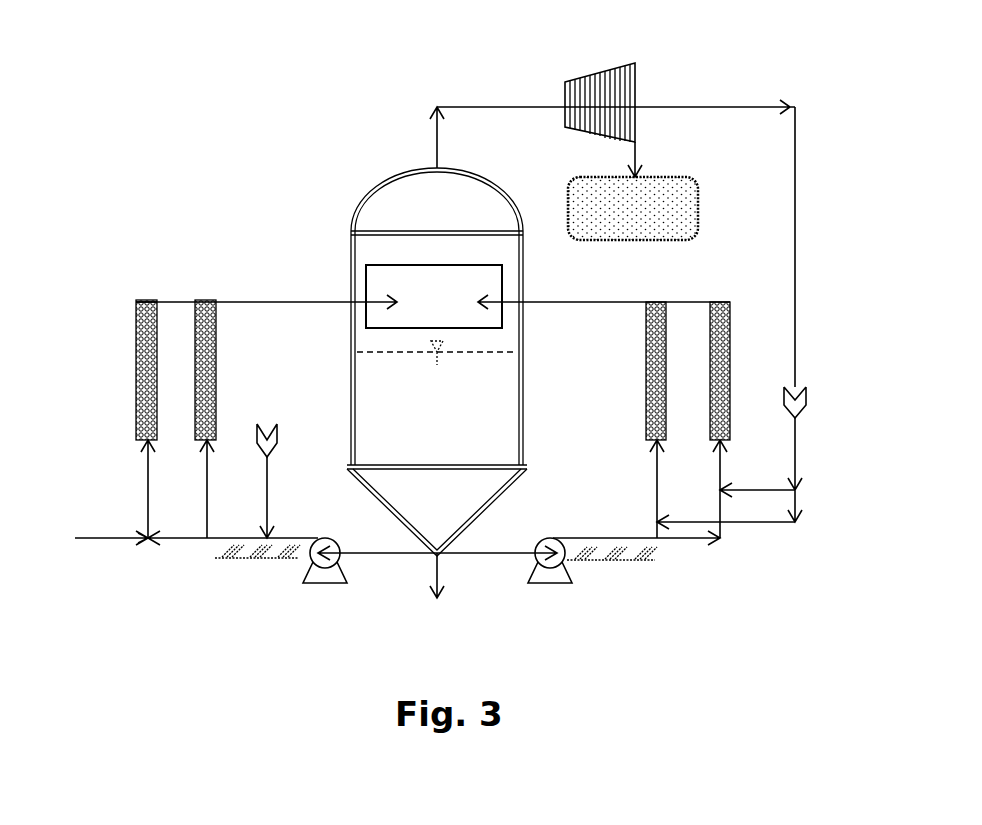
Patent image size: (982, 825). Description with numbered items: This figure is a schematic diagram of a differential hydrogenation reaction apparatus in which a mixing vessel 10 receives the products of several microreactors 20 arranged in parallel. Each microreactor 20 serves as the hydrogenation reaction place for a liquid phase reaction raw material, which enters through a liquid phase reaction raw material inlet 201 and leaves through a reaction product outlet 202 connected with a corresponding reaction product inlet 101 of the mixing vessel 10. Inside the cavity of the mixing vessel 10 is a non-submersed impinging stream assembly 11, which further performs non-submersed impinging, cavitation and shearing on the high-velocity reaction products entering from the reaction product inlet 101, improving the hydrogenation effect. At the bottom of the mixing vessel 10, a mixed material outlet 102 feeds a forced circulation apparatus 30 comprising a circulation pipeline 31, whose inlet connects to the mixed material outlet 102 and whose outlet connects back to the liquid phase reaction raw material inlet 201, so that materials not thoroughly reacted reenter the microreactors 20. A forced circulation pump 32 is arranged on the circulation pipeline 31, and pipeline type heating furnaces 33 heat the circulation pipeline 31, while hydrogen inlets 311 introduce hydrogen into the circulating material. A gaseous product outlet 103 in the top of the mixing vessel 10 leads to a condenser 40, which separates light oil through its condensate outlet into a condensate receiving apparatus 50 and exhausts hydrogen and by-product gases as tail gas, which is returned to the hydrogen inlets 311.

The mixing vessel 10 is at (354, 214).
The reaction product inlet 101 is at (349, 300).
The mixed material outlet 102 is at (441, 560).
The gaseous product outlet 103 is at (432, 165).
The non-submersed impinging stream assembly 11 is at (498, 287).
The microreactor 20 is at (138, 372).
The liquid phase reaction raw material inlet 201 is at (146, 442).
The reaction product outlet 202 is at (150, 300).
The forced circulation apparatus 30 is at (471, 552).
The circulation pipeline 31 is at (389, 562).
The forced circulation pump 32 is at (322, 584).
The pipeline type heating furnace 33 is at (247, 565).
The hydrogen inlet 311 is at (272, 530).
The condenser 40 is at (595, 75).
The condensate receiving apparatus 50 is at (683, 233).